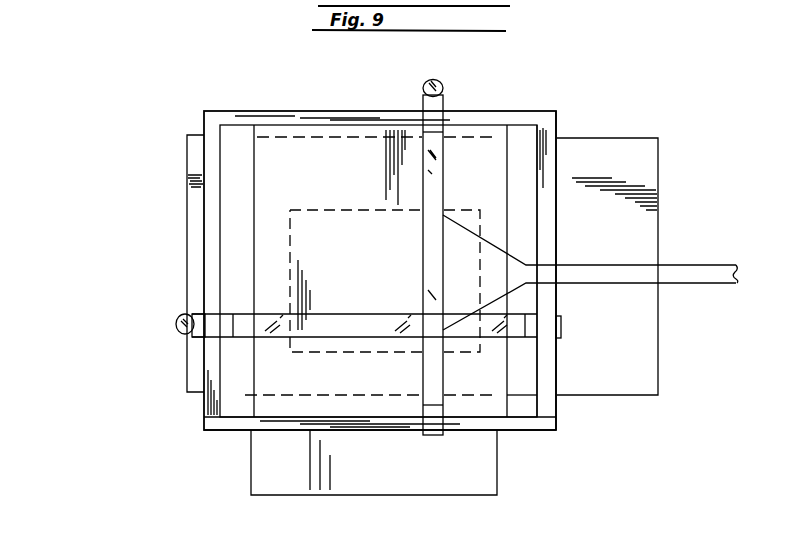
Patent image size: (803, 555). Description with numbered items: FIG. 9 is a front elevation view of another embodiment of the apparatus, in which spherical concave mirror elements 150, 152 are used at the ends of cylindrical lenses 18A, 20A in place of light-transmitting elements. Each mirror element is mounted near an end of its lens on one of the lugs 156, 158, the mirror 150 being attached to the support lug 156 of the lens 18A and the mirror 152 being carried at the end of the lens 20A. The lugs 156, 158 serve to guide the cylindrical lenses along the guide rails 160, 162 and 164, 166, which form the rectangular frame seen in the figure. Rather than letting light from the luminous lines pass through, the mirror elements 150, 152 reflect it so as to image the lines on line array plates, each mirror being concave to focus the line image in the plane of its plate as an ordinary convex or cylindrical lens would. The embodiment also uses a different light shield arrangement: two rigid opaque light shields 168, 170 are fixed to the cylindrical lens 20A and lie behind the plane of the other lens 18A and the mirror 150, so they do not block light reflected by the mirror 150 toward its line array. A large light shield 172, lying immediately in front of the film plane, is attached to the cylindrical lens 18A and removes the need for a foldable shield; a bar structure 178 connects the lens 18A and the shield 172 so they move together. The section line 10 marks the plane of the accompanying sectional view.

The section line 10 is at (121, 155).
The cylindrical lens 18A is at (428, 262).
The cylindrical lens 20A is at (362, 320).
The spherical concave mirror element 150 is at (445, 87).
The spherical concave mirror element 152 is at (178, 327).
The lug 156 is at (422, 109).
The lug 158 is at (200, 337).
The guide rail 160 is at (536, 119).
The guide rail 162 is at (521, 430).
The guide rail 164 is at (205, 276).
The guide rail 166 is at (547, 408).
The rigid opaque light shield 168 is at (306, 137).
The rigid opaque light shield 170 is at (386, 484).
The large light shield 172 is at (657, 395).
The bar structure 178 is at (720, 283).